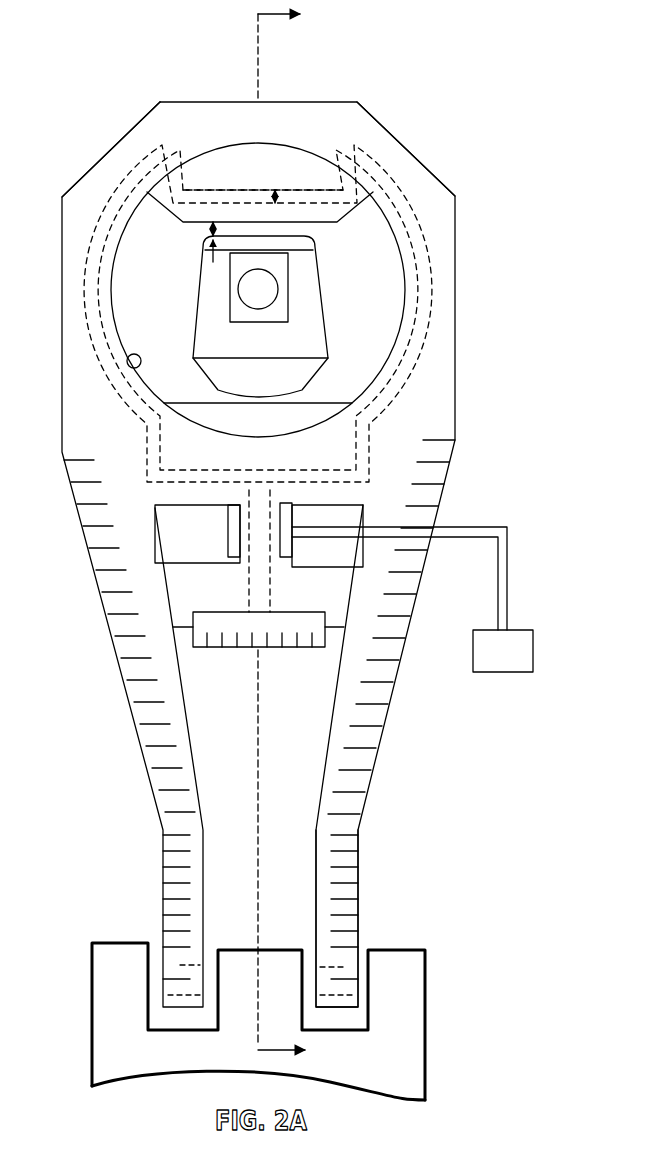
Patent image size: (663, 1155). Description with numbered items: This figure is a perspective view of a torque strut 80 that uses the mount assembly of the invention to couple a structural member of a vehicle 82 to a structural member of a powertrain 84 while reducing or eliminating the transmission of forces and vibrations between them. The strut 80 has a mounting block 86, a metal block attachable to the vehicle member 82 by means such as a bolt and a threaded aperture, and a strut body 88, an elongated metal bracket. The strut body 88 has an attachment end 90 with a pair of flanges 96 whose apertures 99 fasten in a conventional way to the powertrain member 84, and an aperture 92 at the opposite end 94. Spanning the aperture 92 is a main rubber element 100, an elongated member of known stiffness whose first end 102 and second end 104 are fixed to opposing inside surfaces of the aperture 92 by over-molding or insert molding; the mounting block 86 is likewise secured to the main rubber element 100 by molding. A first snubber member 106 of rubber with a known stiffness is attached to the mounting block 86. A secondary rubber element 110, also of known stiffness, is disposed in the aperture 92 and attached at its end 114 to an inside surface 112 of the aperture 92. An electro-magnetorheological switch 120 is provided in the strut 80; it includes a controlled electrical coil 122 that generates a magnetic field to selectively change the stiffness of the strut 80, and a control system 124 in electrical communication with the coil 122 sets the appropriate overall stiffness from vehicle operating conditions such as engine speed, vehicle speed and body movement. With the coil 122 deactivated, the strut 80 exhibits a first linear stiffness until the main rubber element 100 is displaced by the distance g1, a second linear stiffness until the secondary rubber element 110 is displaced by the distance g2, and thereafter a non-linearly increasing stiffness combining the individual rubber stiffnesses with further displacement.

The torque strut 80 is at (412, 100).
The structural member of a vehicle 82 is at (290, 290).
The structural member of a powertrain 84 is at (408, 1010).
The mounting block 86 is at (222, 338).
The strut body 88 is at (440, 500).
The attachment end 90 is at (367, 877).
The aperture 92 is at (127, 361).
The opposite end 94 is at (160, 102).
The flanges 96 is at (205, 832).
The apertures 99 is at (180, 965).
The main rubber element 100 is at (393, 287).
The first end 102 is at (455, 196).
The second end 104 is at (147, 192).
The first snubber member 106 is at (247, 230).
The secondary rubber element 110 is at (313, 160).
The inside surface 112 is at (317, 157).
The end 114 is at (250, 236).
The electro-magnetorheological (EMR) switch 120 is at (312, 550).
The controlled electrical coil 122 is at (228, 543).
The control system 124 is at (519, 665).
The distance g1 is at (214, 257).
The distance g2 is at (277, 176).